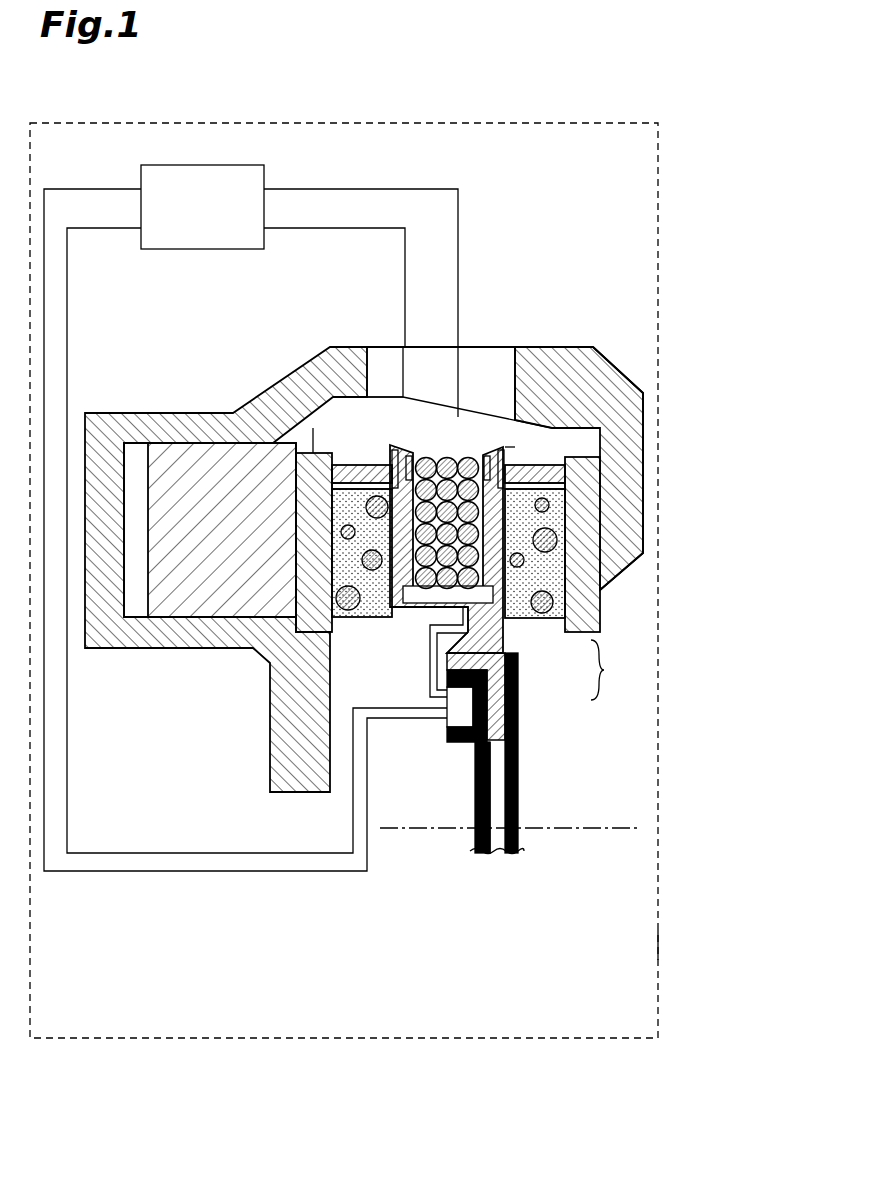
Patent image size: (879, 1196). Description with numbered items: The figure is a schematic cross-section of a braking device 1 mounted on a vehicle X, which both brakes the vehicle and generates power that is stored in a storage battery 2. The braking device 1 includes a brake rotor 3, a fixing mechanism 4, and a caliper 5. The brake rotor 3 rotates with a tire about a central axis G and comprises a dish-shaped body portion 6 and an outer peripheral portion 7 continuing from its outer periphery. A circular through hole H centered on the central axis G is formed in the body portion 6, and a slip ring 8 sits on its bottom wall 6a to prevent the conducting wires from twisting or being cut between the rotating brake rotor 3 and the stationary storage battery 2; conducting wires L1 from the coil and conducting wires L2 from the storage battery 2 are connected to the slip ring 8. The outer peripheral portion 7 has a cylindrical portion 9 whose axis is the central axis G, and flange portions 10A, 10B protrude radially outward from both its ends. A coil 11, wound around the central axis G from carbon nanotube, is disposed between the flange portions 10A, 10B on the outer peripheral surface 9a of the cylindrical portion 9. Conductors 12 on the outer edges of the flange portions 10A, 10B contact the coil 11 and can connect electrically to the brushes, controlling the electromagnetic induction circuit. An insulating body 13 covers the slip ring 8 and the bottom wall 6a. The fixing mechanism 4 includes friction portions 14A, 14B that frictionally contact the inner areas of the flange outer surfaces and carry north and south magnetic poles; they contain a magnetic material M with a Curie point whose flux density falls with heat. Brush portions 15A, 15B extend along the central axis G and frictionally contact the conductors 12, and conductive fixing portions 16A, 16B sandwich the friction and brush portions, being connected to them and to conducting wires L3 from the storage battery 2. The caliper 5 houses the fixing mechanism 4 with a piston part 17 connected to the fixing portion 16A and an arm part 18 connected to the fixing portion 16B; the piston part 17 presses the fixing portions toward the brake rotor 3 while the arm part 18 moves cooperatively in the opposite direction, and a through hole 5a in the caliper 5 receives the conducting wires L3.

The braking device 1 is at (667, 105).
The vehicle X is at (663, 954).
The storage battery 2 is at (187, 165).
The brake rotor 3 is at (605, 670).
The fixing mechanism 4 is at (360, 438).
The caliper 5 is at (569, 341).
The through hole 5a is at (507, 368).
The body portion 6 is at (533, 731).
The bottom wall 6a is at (497, 690).
The outer peripheral portion 7 is at (535, 618).
The slip ring 8 is at (460, 697).
The cylindrical portion 9 is at (508, 610).
The outer peripheral surface 9a is at (430, 585).
The flange portion 10A is at (400, 438).
The flange portion 10B is at (518, 449).
The coil 11 is at (507, 520).
The conductors 12 is at (485, 448).
The insulating body 13 is at (475, 785).
The friction portion 14A is at (342, 568).
The friction portion 14B is at (552, 575).
The brush portion 15A is at (347, 456).
The brush portion 15B is at (545, 456).
The fixing portion 16A is at (307, 553).
The fixing portion 16B is at (585, 487).
The piston part 17 is at (171, 473).
The arm part 18 is at (632, 445).
The conducting wires L1 is at (430, 652).
The conducting wires L2 is at (367, 824).
The conducting wires L3 is at (406, 277).
The magnetic material M is at (365, 503).
The through hole H is at (497, 742).
The central axis G is at (600, 828).